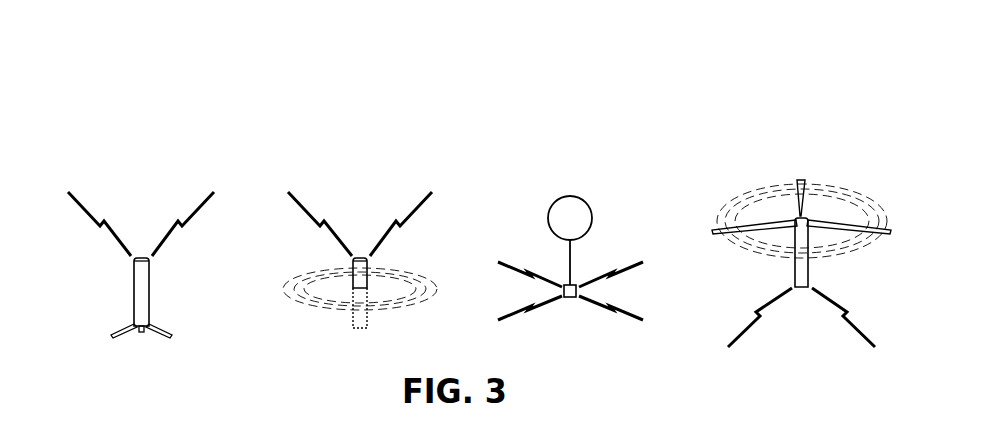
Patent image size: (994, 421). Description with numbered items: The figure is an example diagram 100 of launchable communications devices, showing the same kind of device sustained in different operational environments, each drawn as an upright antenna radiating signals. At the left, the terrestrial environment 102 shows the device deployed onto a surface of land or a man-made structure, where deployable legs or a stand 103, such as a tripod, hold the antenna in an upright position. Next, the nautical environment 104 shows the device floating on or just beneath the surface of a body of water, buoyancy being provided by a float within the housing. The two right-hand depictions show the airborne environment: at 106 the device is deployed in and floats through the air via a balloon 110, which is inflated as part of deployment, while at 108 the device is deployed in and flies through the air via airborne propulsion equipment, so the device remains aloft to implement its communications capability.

The diagram 100 is at (125, 50).
The terrestrial environment 102 is at (141, 140).
The deployable legs or stand 103 is at (158, 326).
The nautical environment 104 is at (360, 140).
The airborne environment with balloon 106 is at (570, 140).
The airborne environment with propulsion 108 is at (800, 140).
The balloon 110 is at (552, 203).